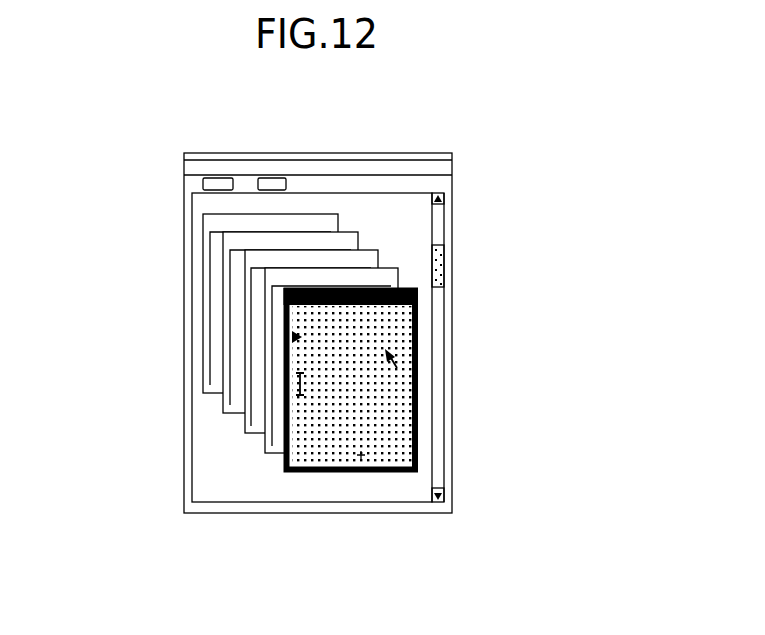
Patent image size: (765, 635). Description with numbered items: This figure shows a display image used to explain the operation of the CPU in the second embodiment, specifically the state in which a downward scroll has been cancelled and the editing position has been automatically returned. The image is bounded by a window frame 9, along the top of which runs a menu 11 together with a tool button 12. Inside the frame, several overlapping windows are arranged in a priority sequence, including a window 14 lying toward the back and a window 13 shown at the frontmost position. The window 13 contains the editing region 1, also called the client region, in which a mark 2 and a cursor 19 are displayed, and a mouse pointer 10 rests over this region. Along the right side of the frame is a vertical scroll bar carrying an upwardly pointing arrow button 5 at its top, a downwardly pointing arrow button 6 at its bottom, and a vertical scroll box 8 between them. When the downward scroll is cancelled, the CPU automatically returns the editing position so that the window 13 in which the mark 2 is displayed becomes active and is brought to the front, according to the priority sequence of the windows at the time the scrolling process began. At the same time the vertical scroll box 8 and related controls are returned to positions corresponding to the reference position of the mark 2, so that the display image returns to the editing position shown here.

The editing region 1 is at (363, 473).
The mark 2 is at (294, 337).
The upwardly pointing arrow button 5 is at (446, 197).
The downwardly pointing arrow button 6 is at (446, 495).
The vertical scroll box 8 is at (445, 268).
The window frame 9 is at (184, 438).
The mouse pointer 10 is at (394, 363).
The menu 11 is at (237, 161).
The tool button 12 is at (203, 185).
The window 13 is at (293, 473).
The window 14 is at (204, 348).
The cursor 19 is at (344, 400).